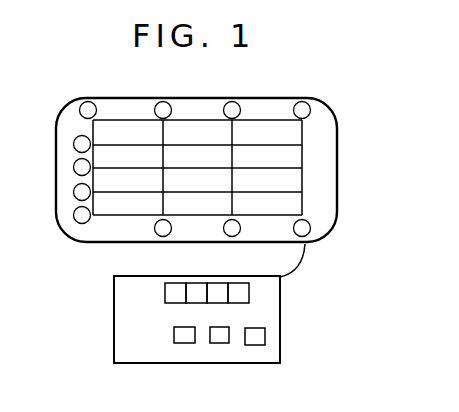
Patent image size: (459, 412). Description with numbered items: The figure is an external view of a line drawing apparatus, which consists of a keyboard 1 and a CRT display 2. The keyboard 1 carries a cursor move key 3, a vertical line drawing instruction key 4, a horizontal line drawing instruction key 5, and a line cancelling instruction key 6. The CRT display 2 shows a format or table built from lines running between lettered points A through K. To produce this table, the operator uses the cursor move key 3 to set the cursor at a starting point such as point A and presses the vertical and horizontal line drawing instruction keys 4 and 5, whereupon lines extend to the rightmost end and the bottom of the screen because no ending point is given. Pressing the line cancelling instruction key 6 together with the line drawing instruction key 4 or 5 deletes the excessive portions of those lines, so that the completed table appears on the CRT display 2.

The keyboard 1 is at (133, 276).
The CRT display 2 is at (337, 152).
The cursor move key 3 is at (249, 293).
The vertical line drawing instruction key 4 is at (182, 343).
The horizontal line drawing instruction key 5 is at (218, 343).
The line cancelling instruction key 6 is at (265, 336).